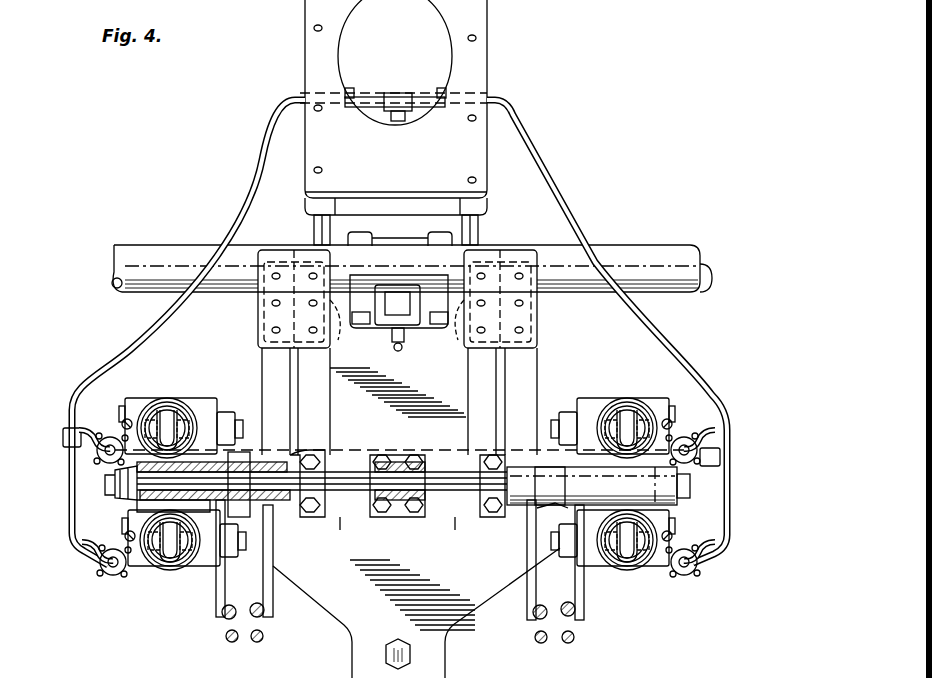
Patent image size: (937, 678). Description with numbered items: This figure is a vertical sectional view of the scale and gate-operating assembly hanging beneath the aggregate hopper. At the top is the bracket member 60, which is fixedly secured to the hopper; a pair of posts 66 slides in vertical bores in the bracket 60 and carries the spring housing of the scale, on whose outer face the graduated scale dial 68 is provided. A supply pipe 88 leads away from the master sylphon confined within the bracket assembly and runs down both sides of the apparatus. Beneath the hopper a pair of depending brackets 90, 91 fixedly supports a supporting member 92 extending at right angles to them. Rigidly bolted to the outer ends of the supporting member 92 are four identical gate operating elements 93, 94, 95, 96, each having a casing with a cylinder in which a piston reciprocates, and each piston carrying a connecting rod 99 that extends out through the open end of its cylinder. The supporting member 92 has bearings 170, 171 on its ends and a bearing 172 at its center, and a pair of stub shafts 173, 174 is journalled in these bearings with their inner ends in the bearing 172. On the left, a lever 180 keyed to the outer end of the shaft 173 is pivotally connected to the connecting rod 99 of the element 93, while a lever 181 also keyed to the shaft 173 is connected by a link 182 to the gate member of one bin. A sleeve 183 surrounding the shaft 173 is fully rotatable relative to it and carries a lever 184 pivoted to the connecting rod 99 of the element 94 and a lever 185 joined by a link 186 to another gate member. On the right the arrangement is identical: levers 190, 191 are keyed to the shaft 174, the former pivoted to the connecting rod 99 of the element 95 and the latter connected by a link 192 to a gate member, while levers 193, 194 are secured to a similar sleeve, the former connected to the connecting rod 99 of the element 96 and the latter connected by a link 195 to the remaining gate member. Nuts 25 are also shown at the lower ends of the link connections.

The bracket member 60 is at (478, 65).
The posts 66 is at (318, 224).
The supply pipe 88 is at (262, 160).
The depending bracket 90 is at (312, 332).
The depending bracket 91 is at (482, 332).
The supporting member 92 is at (438, 458).
The gate operating element 93 is at (190, 396).
The gate operating element 94 is at (160, 582).
The gate operating element 95 is at (626, 392).
The gate operating element 96 is at (634, 581).
The connecting rod 99 is at (166, 430).
The bearing 170 is at (258, 455).
The bearing 171 is at (560, 468).
The bearing 172 is at (405, 460).
The stub shaft 173 is at (352, 505).
The stub shaft 174 is at (450, 505).
The lever 180 is at (108, 486).
The lever 181 is at (274, 554).
The link 182 is at (256, 603).
The sleeve 183 is at (213, 481).
The lever 184 is at (135, 510).
The lever 185 is at (218, 592).
The link 186 is at (226, 618).
The lever 190 is at (720, 457).
The lever 191 is at (528, 574).
The link 192 is at (540, 620).
The lever 193 is at (692, 484).
The lever 194 is at (545, 510).
The link 195 is at (568, 603).
The nuts 25 is at (236, 641).
The scale dial 68 is at (340, 622).